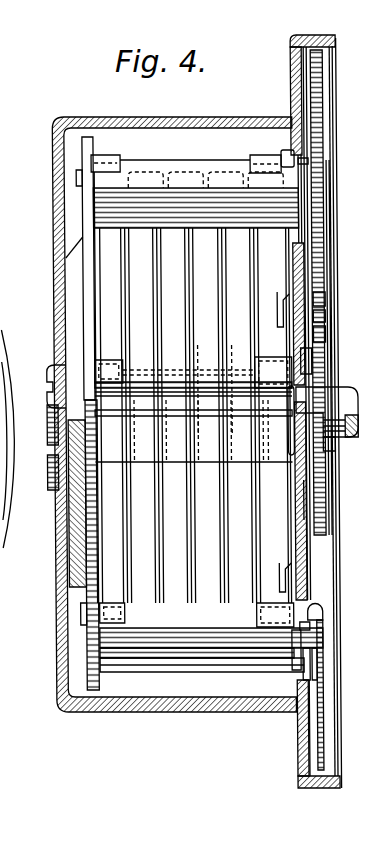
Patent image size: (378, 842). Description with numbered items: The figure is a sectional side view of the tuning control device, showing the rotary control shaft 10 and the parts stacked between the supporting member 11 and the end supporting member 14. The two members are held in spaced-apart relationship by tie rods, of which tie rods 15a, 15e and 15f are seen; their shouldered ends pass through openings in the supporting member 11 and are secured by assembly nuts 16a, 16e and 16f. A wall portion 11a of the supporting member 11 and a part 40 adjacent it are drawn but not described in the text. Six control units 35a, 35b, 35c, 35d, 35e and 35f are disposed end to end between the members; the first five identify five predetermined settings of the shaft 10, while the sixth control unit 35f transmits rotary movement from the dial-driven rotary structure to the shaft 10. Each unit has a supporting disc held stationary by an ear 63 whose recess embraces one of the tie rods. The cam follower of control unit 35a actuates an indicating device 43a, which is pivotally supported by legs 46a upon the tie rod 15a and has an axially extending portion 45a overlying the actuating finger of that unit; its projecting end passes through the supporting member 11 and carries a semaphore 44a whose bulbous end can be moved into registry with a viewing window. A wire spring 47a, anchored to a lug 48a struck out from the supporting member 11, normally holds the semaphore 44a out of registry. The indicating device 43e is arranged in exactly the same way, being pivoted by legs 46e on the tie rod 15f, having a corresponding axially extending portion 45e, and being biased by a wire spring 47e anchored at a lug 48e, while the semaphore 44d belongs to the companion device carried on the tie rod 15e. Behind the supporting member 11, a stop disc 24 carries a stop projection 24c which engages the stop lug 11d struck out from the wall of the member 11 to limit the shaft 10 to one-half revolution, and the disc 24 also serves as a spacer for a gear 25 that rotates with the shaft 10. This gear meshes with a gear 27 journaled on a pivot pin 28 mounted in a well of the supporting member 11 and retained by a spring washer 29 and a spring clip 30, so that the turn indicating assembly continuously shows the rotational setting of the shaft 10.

The rotary control shaft 10 is at (341, 392).
The supporting member 11 is at (293, 60).
The top wall 11a is at (318, 31).
The stop lug 11d is at (305, 490).
The end supporting member 14 is at (86, 680).
The tie rod 15a is at (79, 625).
The tie rod 15e is at (78, 172).
The tie rod 15f is at (70, 366).
The lower bearing 16a is at (323, 612).
The upper bearing 16e is at (290, 150).
The shaft bearing 16f is at (312, 356).
The stop disc 24 is at (303, 507).
The stop projection 24c is at (331, 448).
The gear 25 is at (320, 336).
The gear 27 is at (325, 78).
The pivot pin 28 is at (339, 162).
The spring washer 29 is at (308, 140).
The spring clip 30 is at (330, 138).
The control unit 35a is at (114, 387).
The control unit 35b is at (151, 415).
The control unit 35c is at (182, 415).
The control unit 35d is at (214, 415).
The control unit 35e is at (249, 415).
The control unit 35f is at (276, 415).
The wall lining 40 is at (293, 86).
The indicating device 43a is at (182, 676).
The indicating device 43e is at (205, 232).
The semaphore 44a is at (323, 740).
The semaphore 44d is at (320, 302).
The axially extending portion 45a is at (210, 673).
The middle bar 45e is at (194, 405).
The legs 46a is at (98, 603).
The upper block 46e is at (97, 360).
The wire spring 47a is at (290, 665).
The wire spring 47e is at (320, 318).
The lug 48a is at (282, 578).
The lug 48e is at (281, 305).
The ear 63 is at (200, 388).